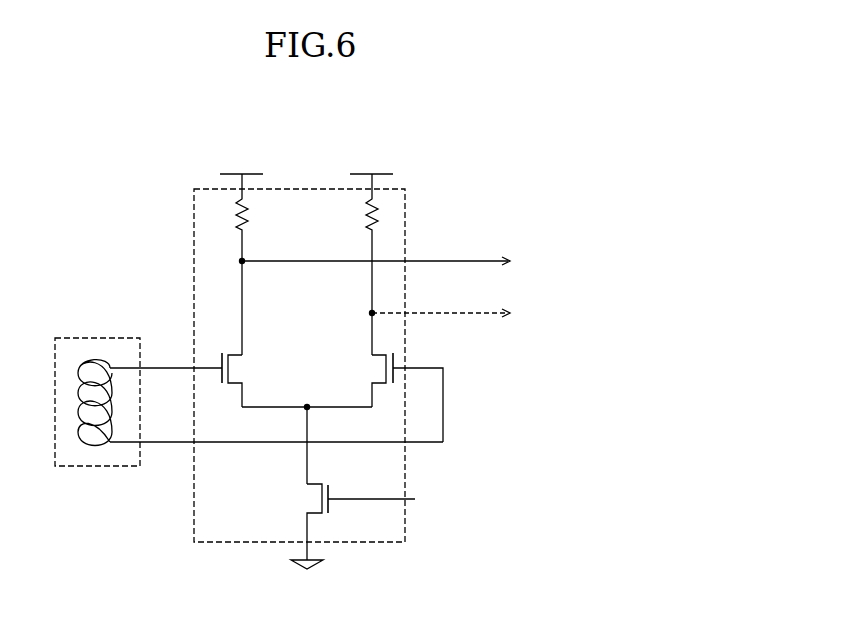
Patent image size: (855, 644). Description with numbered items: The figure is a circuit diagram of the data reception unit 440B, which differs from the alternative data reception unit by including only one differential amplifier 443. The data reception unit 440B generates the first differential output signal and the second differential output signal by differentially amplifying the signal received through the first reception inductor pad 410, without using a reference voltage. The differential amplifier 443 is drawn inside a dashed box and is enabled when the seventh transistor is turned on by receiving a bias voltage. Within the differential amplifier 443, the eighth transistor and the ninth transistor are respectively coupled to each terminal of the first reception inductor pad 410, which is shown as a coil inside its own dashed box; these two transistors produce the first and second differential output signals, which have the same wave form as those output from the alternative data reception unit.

The data reception unit 440B is at (512, 148).
The differential amplifier 443 is at (194, 225).
The first reception inductor pad 410 is at (107, 338).